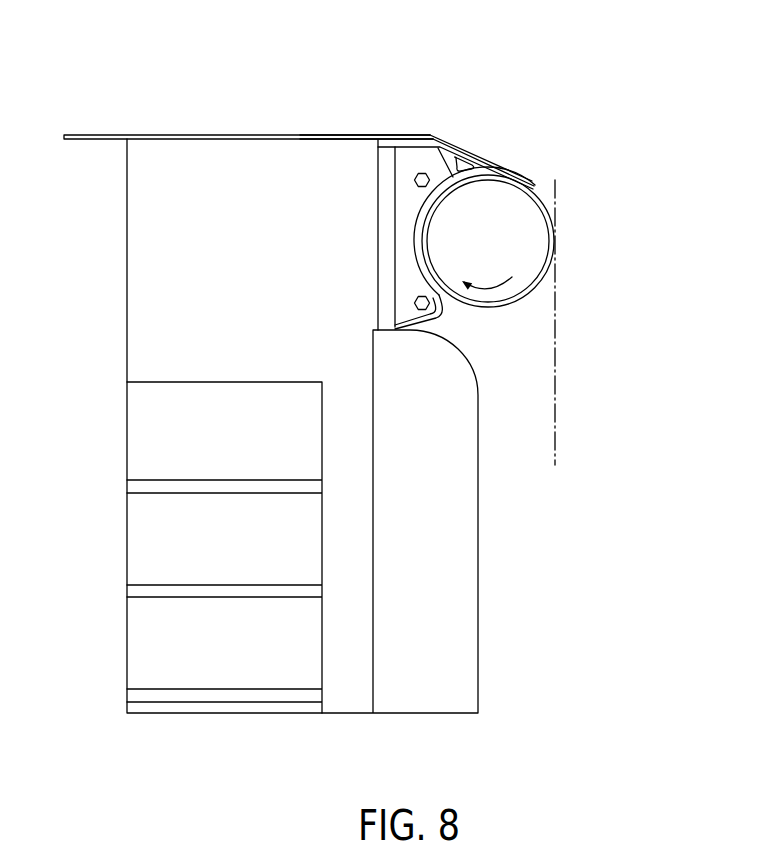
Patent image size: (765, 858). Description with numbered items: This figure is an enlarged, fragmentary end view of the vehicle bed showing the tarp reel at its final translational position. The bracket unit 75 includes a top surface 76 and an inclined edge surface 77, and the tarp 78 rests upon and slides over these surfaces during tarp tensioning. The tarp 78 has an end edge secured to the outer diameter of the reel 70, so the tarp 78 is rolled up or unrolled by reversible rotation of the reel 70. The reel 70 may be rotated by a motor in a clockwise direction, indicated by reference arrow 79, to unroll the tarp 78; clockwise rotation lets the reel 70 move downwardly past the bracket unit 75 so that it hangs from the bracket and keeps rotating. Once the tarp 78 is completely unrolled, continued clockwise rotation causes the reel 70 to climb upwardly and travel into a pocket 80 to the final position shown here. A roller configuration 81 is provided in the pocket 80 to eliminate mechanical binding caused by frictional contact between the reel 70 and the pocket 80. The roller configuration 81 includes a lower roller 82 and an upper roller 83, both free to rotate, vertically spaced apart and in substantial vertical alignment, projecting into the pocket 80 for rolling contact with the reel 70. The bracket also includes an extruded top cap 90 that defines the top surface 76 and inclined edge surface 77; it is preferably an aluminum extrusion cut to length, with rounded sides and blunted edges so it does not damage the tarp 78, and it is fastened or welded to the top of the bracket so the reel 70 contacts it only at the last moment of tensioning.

The reel 70 is at (553, 213).
The bracket unit 75 is at (413, 135).
The top surface 76 is at (388, 134).
The inclined edge surface 77 is at (453, 150).
The tarp 78 is at (98, 134).
The reference arrow 79 is at (493, 282).
The pocket 80 is at (420, 227).
The roller configuration 81 is at (450, 320).
The lower roller 82 is at (447, 310).
The upper roller 83 is at (440, 198).
The top cap 90 is at (442, 147).